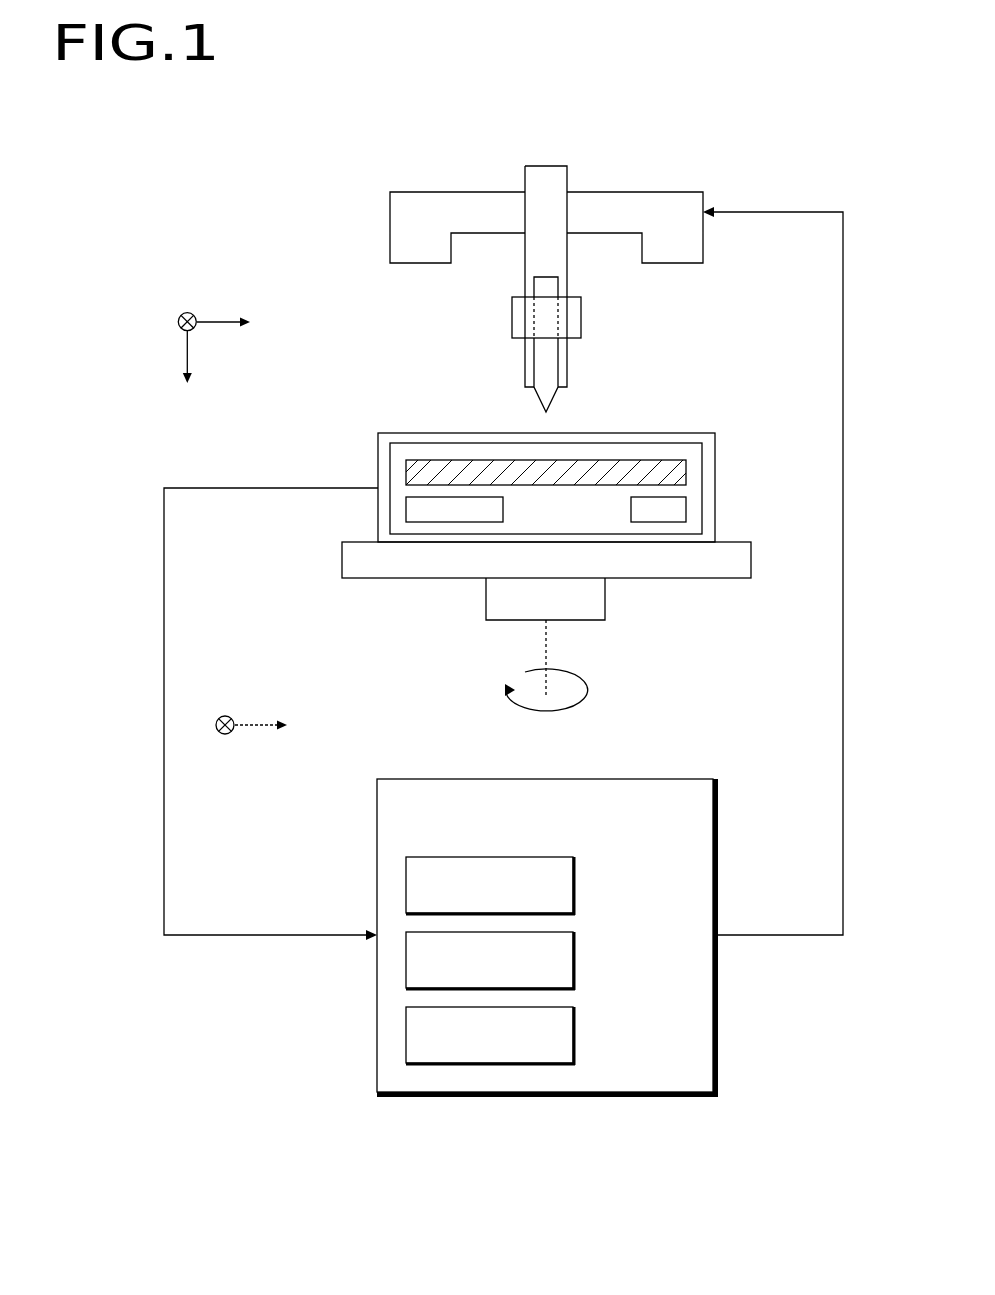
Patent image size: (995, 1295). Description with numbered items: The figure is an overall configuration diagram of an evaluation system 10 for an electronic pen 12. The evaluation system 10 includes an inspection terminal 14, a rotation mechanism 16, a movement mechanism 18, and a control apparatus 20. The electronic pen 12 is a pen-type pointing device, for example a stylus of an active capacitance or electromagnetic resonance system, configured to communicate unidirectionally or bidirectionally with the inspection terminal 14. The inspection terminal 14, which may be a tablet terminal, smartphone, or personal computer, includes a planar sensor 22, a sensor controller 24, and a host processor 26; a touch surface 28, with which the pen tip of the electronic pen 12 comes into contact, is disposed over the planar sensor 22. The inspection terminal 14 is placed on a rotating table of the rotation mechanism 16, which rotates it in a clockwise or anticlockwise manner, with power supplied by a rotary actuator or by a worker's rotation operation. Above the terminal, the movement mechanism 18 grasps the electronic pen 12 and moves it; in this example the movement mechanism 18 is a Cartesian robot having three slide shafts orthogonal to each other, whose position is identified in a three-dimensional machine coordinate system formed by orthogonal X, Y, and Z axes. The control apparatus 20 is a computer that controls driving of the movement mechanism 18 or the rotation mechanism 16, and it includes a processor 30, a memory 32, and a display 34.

The evaluation system 10 is at (244, 204).
The electronic pen 12 is at (545, 361).
The inspection terminal 14 is at (708, 467).
The rotation mechanism 16 is at (678, 553).
The movement mechanism 18 is at (410, 213).
The control apparatus 20 is at (647, 779).
The planar sensor 22 is at (411, 474).
The sensor controller 24 is at (418, 507).
The host processor 26 is at (675, 512).
The touch surface 28 is at (660, 432).
The processor 30 is at (574, 883).
The memory 32 is at (574, 957).
The display 34 is at (574, 1037).